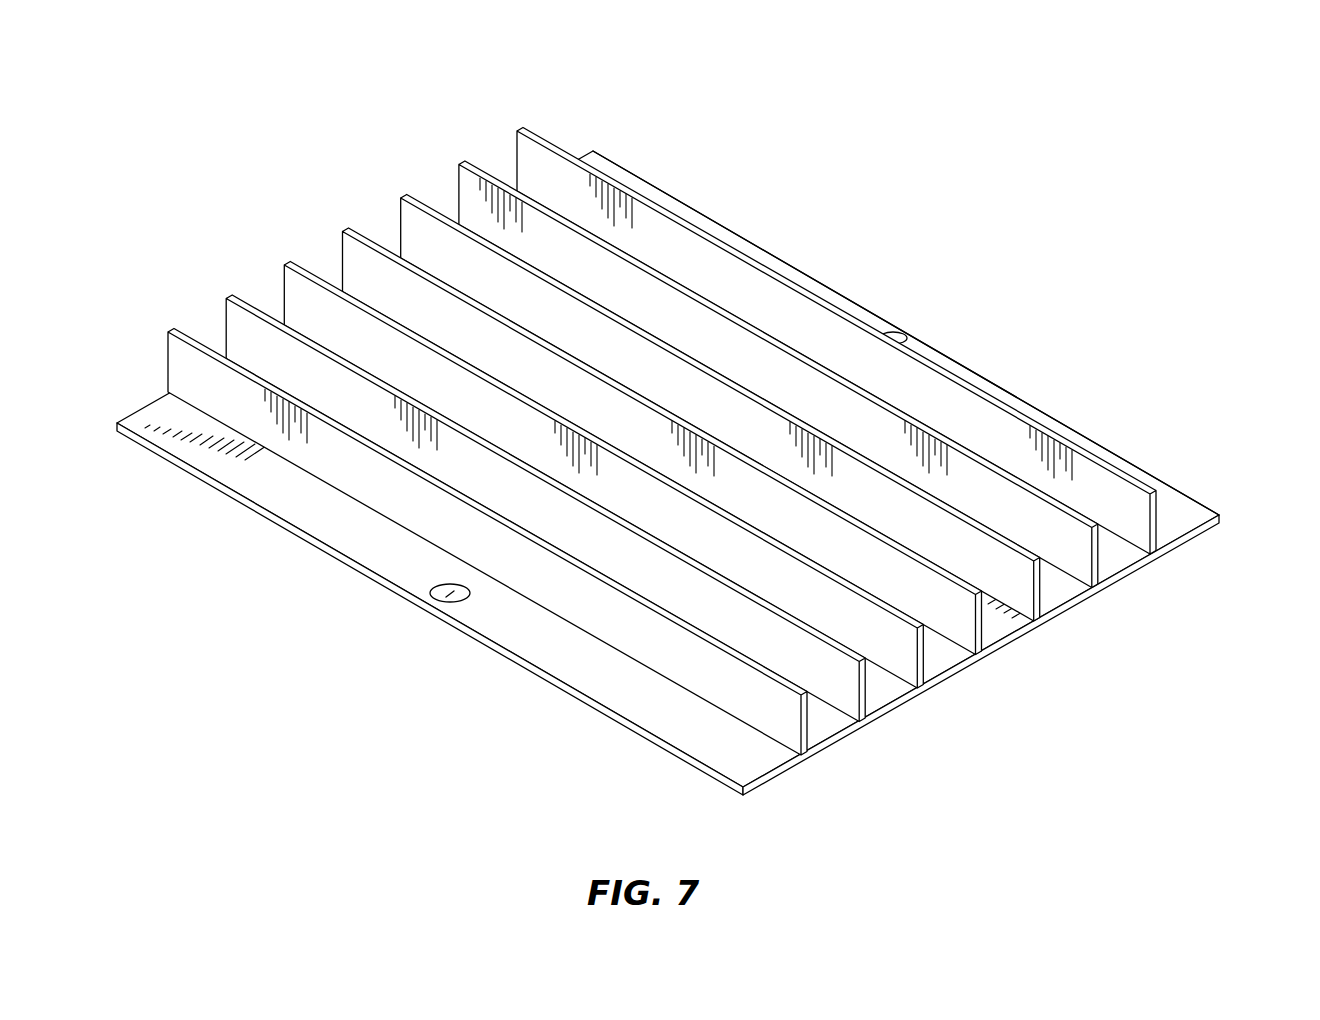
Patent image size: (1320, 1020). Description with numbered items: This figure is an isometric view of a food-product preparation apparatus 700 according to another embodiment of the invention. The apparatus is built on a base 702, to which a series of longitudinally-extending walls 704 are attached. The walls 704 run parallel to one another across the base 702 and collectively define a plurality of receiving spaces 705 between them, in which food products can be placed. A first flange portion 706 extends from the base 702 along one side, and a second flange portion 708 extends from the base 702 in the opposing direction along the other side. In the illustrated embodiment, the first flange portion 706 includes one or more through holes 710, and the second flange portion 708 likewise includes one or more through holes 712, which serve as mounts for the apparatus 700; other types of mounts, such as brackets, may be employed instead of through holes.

The food-product preparation apparatus 700 is at (710, 450).
The base 702 is at (710, 495).
The longitudinally-extending walls 704 is at (1160, 507).
The receiving spaces 705 is at (500, 152).
The first flange portion 706 is at (787, 776).
The second flange portion 708 is at (1207, 537).
The through holes 710 is at (440, 592).
The through holes 712 is at (905, 335).